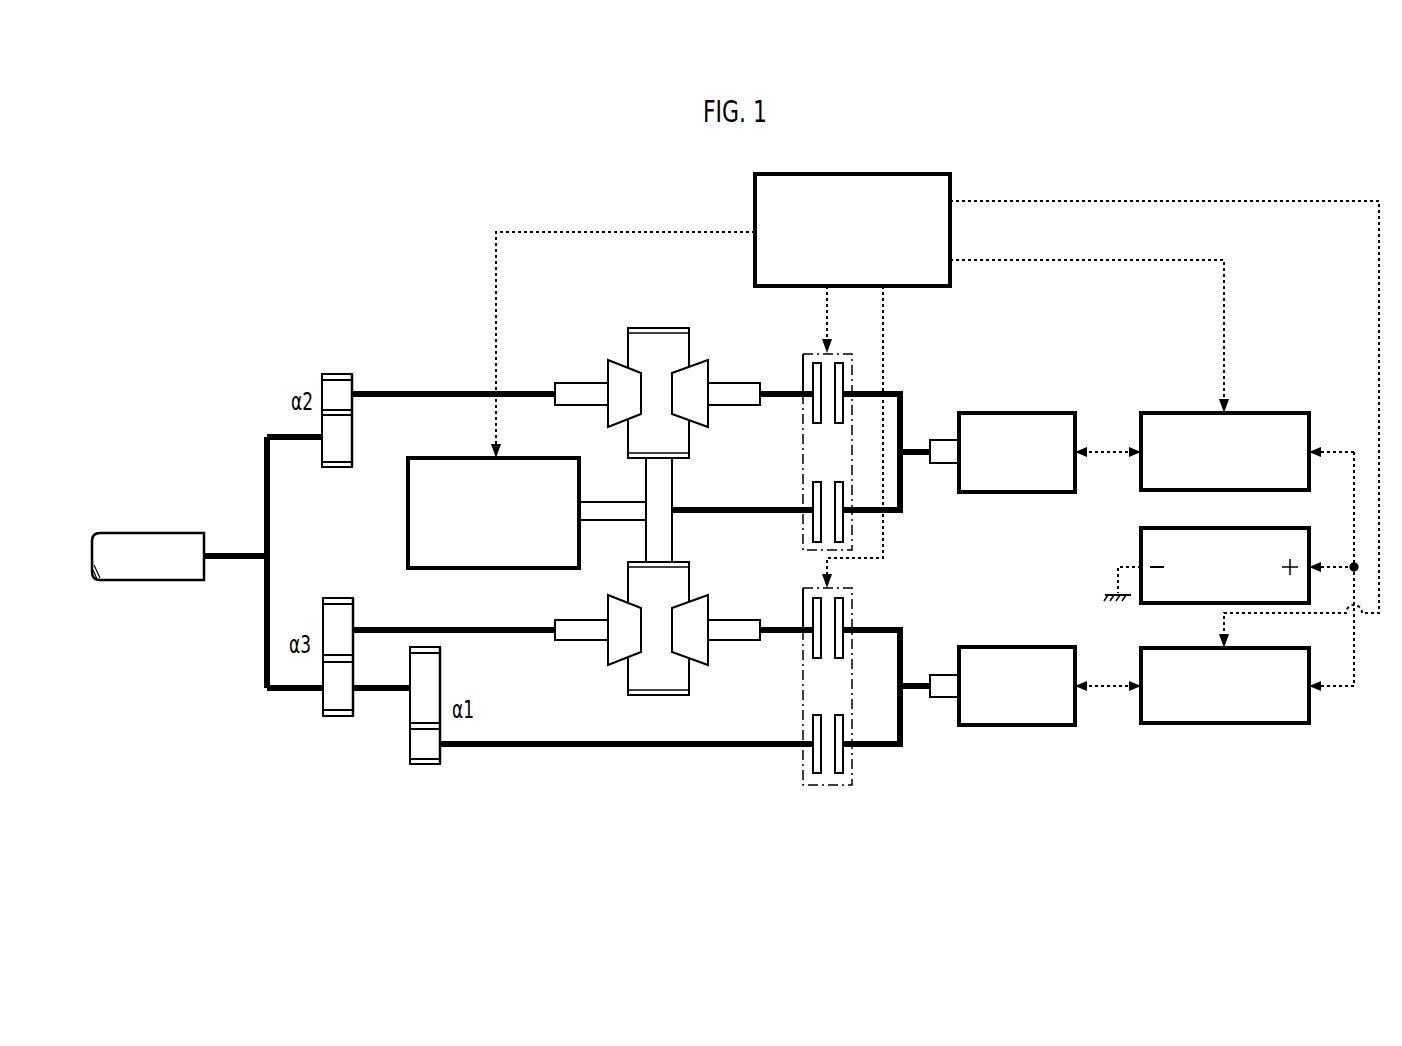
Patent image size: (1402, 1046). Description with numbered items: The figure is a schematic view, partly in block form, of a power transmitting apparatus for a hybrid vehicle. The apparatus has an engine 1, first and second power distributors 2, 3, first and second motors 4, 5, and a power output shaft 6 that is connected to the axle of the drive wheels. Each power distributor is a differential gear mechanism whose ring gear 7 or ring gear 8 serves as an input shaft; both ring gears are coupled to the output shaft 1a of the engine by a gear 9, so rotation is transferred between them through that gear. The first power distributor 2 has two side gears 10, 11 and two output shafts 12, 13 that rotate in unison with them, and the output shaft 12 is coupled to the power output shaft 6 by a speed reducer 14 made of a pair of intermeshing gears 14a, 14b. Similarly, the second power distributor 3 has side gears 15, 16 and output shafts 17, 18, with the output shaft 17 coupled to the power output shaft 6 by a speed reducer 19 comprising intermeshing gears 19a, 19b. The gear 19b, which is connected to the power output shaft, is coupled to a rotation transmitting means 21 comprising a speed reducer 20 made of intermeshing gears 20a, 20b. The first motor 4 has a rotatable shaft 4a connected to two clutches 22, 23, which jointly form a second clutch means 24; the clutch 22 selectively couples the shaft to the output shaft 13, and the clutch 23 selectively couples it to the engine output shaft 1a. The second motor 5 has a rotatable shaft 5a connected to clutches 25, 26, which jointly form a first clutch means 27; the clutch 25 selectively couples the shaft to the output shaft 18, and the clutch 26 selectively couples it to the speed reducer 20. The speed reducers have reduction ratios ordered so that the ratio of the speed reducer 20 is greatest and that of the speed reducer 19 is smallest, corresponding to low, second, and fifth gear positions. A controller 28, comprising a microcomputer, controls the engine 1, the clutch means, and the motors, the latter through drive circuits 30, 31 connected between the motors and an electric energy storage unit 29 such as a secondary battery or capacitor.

The engine 1 is at (508, 458).
The output shaft 1a is at (590, 501).
The first power distributor 2 is at (657, 376).
The second power distributor 3 is at (657, 649).
The first motor 4 is at (1033, 402).
The rotatable shaft 4a is at (940, 440).
The second motor 5 is at (1035, 638).
The rotatable shaft 5a is at (940, 674).
The power output shaft 6 is at (168, 518).
The ring gear 7 is at (650, 327).
The ring gear 8 is at (655, 697).
The gear 9 is at (673, 492).
The side gear 10 is at (606, 368).
The side gear 11 is at (710, 370).
The output shaft 12 is at (578, 405).
The output shaft 13 is at (736, 405).
The speed reducer 14 is at (341, 384).
The gear 14a is at (345, 372).
The gear 14b is at (353, 432).
The side gear 15 is at (606, 602).
The side gear 16 is at (710, 604).
The output shaft 17 is at (578, 640).
The output shaft 18 is at (736, 640).
The speed reducer 19 is at (336, 689).
The gear 19a is at (354, 612).
The gear 19b is at (322, 708).
The speed reducer 20 is at (424, 737).
The gear 20a is at (442, 661).
The gear 20b is at (409, 755).
The rotation transmitting means 21 is at (583, 770).
The clutch 22 is at (855, 364).
The clutch 23 is at (856, 536).
The second clutch means 24 is at (870, 451).
The clutch 25 is at (858, 603).
The clutch 26 is at (856, 776).
The first clutch means 27 is at (870, 703).
The controller 28 is at (881, 173).
The electric energy storage unit 29 is at (1280, 528).
The drive circuit 30 is at (1280, 413).
The drive circuit 31 is at (1280, 648).